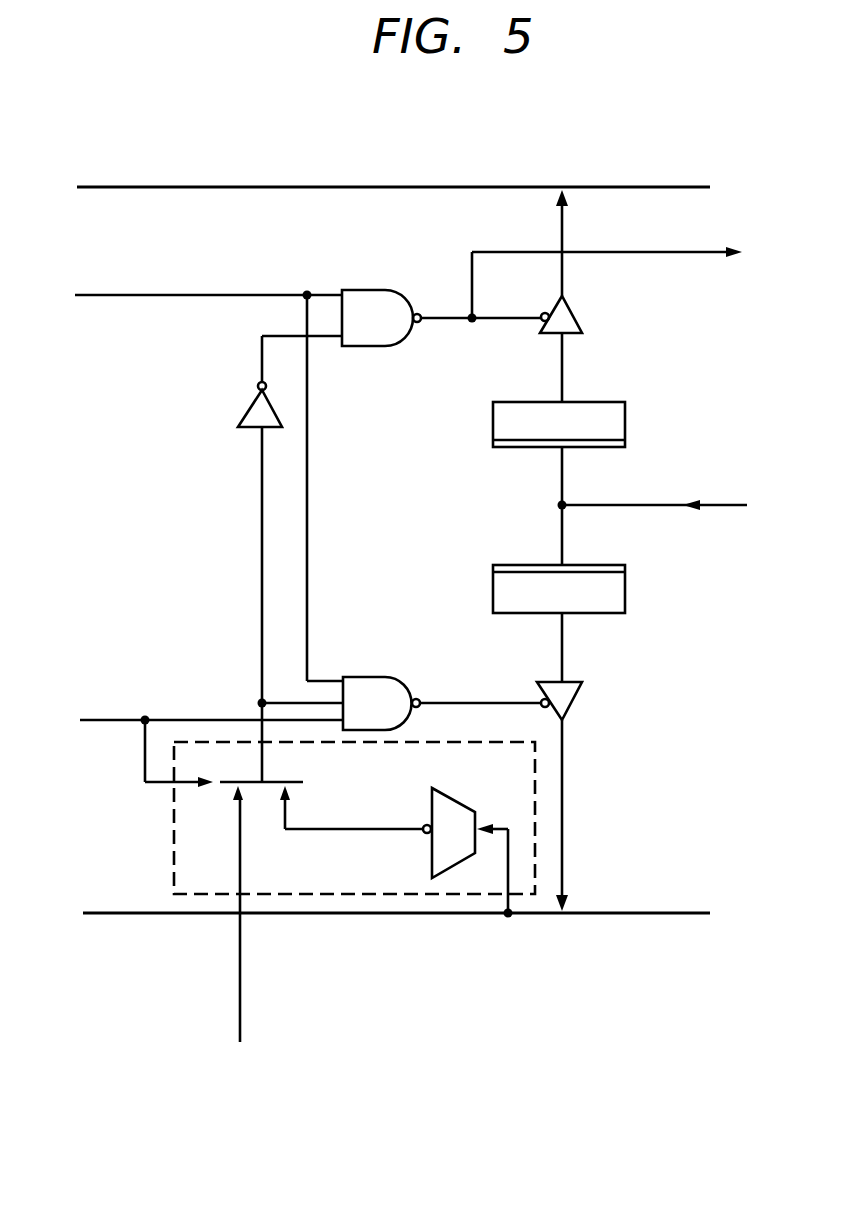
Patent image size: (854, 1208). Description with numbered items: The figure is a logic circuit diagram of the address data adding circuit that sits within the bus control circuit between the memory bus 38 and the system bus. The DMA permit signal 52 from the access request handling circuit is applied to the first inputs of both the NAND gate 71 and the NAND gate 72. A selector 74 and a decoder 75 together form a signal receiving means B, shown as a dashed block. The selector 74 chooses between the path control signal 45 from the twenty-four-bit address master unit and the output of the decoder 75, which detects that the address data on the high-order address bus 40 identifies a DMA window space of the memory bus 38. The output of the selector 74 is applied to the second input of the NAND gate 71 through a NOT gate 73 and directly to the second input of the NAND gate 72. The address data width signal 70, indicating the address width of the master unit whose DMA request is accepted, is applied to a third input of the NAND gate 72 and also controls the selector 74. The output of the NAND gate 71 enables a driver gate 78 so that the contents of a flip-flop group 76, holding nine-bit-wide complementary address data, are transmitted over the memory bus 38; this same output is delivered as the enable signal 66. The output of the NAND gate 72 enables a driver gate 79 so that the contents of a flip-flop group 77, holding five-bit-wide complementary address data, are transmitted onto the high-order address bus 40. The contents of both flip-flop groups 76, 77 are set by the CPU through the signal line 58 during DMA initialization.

The memory bus 38 is at (130, 186).
The DMA permit signal 52 is at (162, 293).
The NAND gate 71 is at (378, 289).
The enable signal 66 is at (633, 250).
The driver gate 78 is at (572, 318).
The flip-flop group 76 is at (625, 436).
The signal line 58 is at (718, 504).
The flip-flop group 77 is at (625, 606).
The NAND gate 72 is at (380, 677).
The driver gate 79 is at (583, 697).
The NOT gate 73 is at (245, 409).
The address data width signal 70 is at (105, 718).
The signal receiving means B is at (175, 808).
The selector 74 is at (300, 782).
The decoder 75 is at (460, 803).
The high-order address bus 40 is at (142, 912).
The path control signal 45 is at (240, 962).